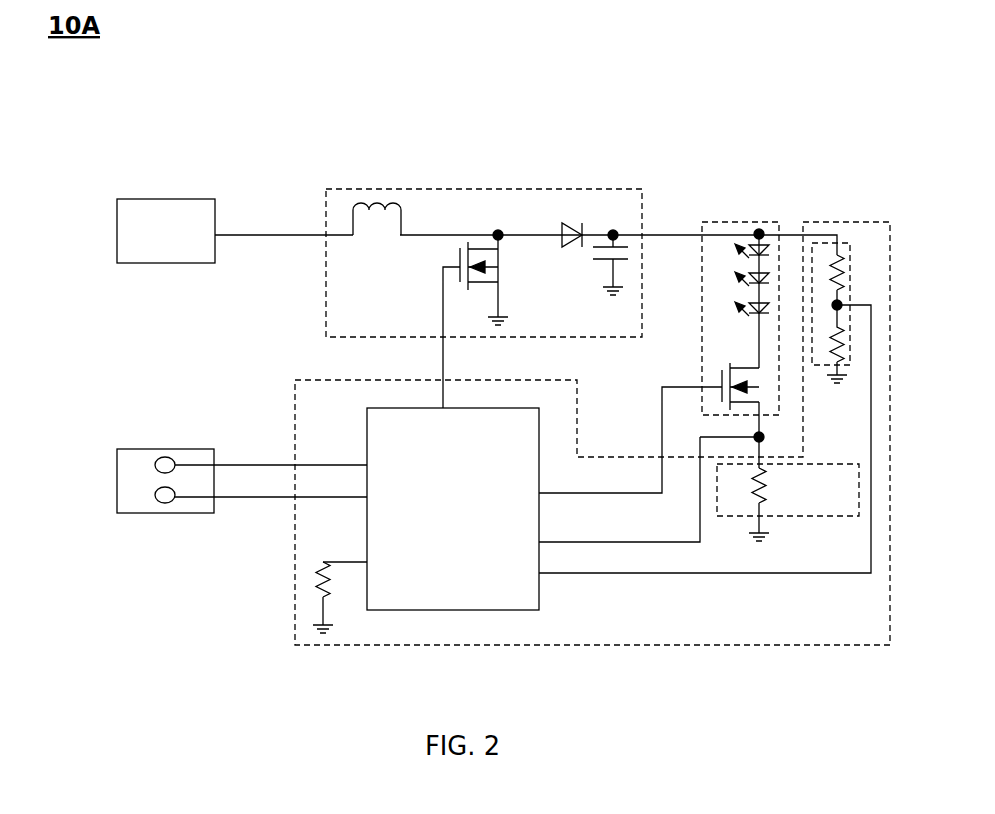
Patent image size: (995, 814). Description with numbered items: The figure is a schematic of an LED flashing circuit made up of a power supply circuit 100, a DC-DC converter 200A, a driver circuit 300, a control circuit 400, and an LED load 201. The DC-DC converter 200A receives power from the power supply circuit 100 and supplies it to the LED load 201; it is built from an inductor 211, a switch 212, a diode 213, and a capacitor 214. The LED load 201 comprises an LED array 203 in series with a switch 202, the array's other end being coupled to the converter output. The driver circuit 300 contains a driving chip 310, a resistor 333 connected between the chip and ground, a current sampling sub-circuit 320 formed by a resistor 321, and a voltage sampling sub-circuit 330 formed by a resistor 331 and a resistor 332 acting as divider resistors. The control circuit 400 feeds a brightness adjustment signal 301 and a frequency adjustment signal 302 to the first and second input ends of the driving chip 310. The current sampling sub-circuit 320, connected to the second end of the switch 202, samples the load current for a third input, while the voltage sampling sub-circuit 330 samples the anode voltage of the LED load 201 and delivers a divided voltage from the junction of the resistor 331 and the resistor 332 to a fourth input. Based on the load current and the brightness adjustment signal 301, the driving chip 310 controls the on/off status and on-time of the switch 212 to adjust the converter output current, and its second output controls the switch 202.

The power supply circuit 100 is at (117, 228).
The DC-DC converter 200A is at (326, 314).
The inductor 211 is at (356, 205).
The switch 212 is at (460, 262).
The diode 213 is at (562, 223).
The capacitor 214 is at (604, 258).
The LED load 201 is at (735, 222).
The LED array 203 is at (740, 285).
The switch 202 is at (722, 384).
The driver circuit 300 is at (295, 393).
The driving chip 310 is at (387, 408).
The current sampling sub-circuit 320 is at (825, 462).
The resistor 321 is at (766, 491).
The voltage sampling sub-circuit 330 is at (851, 290).
The resistor 331 is at (846, 266).
The resistor 332 is at (846, 342).
The resistor 333 is at (316, 570).
The control circuit 400 is at (117, 472).
The brightness adjustment signal 301 is at (165, 455).
The frequency adjustment signal 302 is at (165, 504).